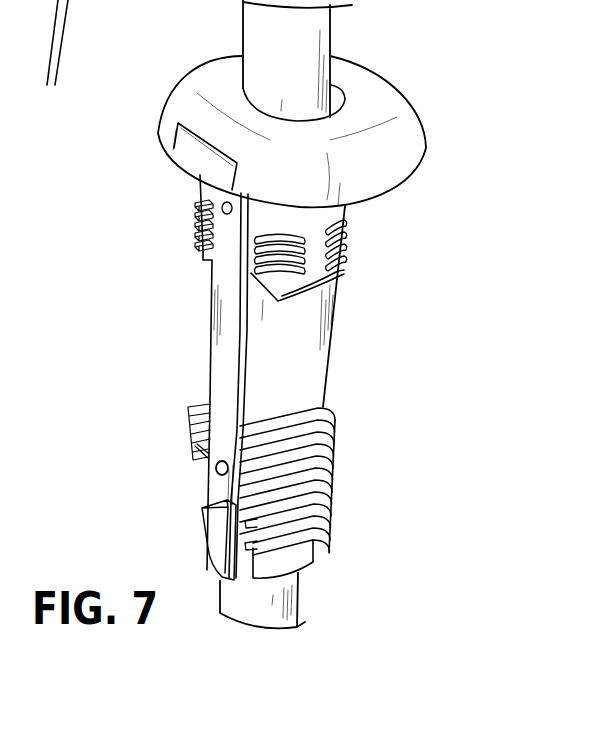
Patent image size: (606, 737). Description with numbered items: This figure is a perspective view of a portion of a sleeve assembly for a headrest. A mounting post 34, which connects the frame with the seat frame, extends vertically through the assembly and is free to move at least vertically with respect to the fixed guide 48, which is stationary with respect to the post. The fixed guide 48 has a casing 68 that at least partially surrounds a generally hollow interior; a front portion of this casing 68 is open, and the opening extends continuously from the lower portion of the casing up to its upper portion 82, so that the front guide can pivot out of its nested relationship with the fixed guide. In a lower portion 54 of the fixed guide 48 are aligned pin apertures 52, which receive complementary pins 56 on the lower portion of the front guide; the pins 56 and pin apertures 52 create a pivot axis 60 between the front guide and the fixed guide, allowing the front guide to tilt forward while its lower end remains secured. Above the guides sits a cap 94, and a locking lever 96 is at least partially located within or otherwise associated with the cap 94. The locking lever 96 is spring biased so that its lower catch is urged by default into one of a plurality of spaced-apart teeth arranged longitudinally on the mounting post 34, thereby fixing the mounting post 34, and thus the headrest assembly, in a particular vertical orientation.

The mounting post 34 is at (257, 31).
The cap 94 is at (403, 113).
The locking lever 96 is at (197, 154).
The upper portion of the fixed guide casing 82 is at (180, 230).
The pin apertures 52 is at (217, 462).
The fixed guide casing 68 is at (332, 322).
The fixed guide 48 is at (340, 272).
The pins 56 is at (229, 470).
The lower portion of the fixed guide 54 is at (320, 543).
The pivot axis 60 is at (214, 472).